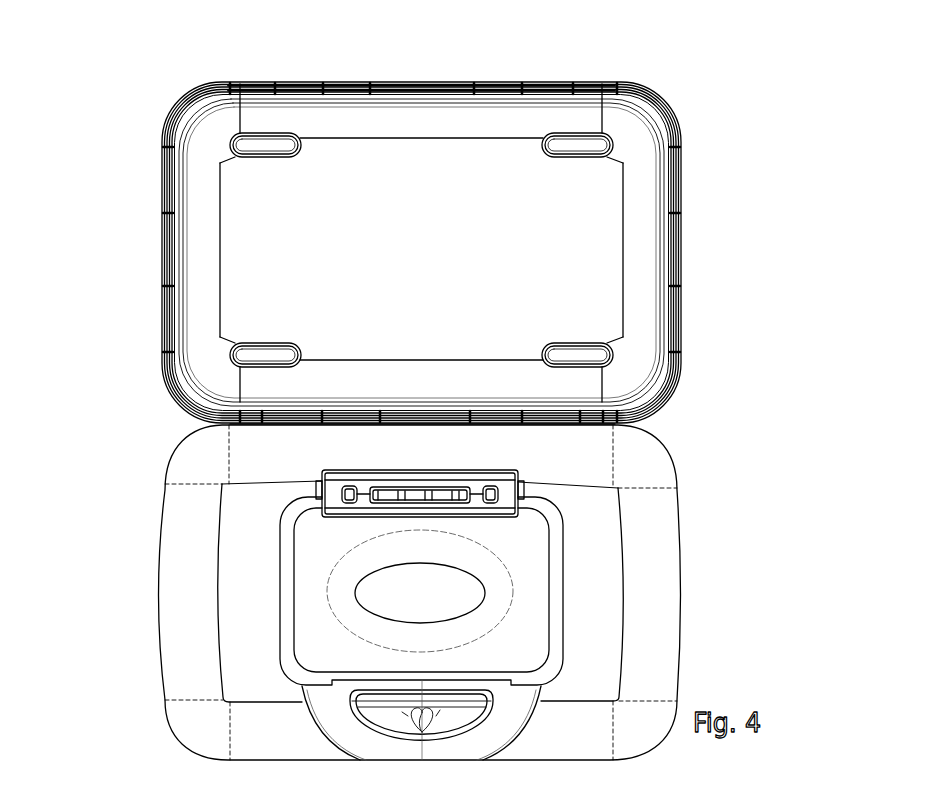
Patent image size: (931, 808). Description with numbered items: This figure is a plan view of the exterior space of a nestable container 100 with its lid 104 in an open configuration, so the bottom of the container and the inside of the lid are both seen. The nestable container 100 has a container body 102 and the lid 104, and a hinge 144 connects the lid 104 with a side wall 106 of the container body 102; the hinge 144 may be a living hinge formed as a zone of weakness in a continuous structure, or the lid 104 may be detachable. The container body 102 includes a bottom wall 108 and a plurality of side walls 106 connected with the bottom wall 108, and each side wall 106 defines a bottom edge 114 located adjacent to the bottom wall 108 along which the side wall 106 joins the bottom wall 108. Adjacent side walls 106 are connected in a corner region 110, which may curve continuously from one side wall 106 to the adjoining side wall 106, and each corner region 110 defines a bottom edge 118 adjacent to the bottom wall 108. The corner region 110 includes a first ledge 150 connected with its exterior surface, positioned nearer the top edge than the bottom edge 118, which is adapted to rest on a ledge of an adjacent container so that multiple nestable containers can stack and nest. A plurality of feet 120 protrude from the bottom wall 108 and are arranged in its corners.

The nestable container 100 is at (784, 72).
The container body 102 is at (643, 280).
The lid 104 is at (667, 603).
The side walls 106 is at (502, 103).
The bottom wall 108 is at (463, 216).
The corner region 110 is at (150, 85).
The bottom edge 114 is at (368, 138).
The bottom edge 118 is at (169, 92).
The feet 120 is at (283, 138).
The hinge 144 is at (547, 430).
The first ledge 150 is at (203, 92).